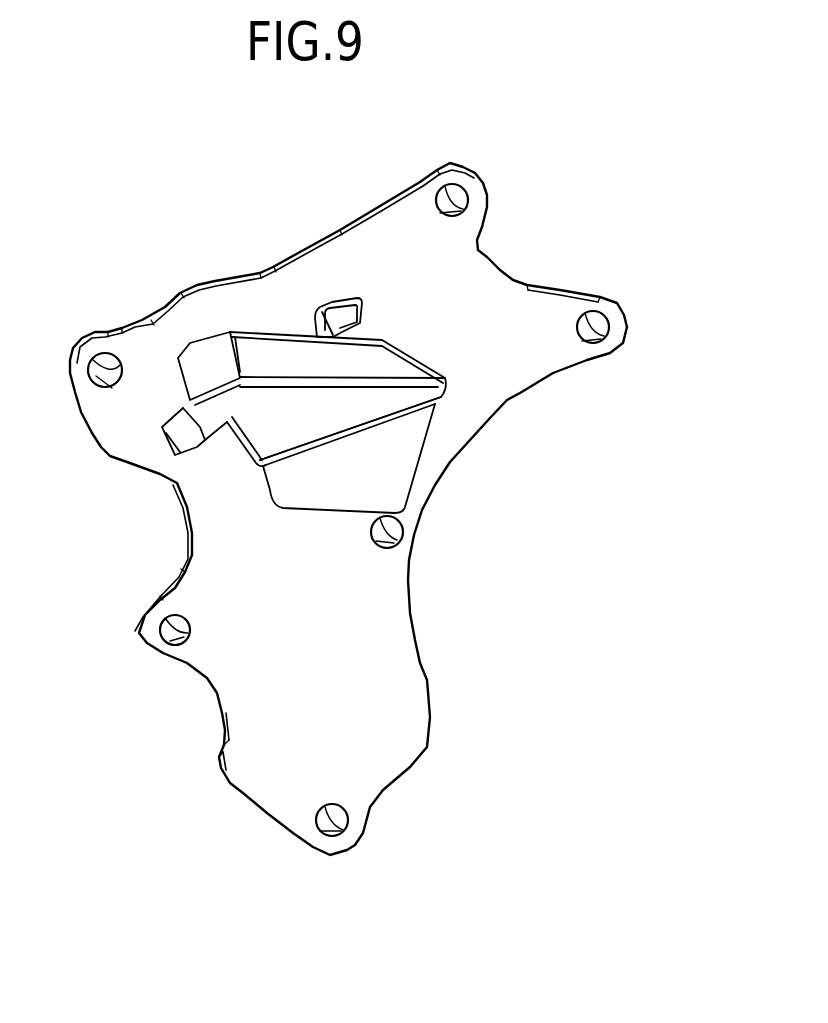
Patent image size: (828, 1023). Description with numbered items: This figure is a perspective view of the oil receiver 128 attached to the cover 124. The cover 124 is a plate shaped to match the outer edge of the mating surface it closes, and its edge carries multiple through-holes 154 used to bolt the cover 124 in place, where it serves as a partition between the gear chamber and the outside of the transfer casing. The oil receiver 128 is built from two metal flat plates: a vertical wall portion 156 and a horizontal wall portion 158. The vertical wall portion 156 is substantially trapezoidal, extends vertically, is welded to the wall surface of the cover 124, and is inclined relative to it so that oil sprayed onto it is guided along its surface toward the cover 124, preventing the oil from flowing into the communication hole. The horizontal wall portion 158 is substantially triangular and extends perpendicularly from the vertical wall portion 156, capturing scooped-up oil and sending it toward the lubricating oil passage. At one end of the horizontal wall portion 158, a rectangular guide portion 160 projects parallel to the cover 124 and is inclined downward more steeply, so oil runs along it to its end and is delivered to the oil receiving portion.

The cover 124 is at (390, 652).
The oil receiver 128 is at (298, 376).
The through-holes 154 is at (108, 380).
The vertical wall portion 156 is at (282, 290).
The horizontal wall portion 158 is at (295, 432).
The guide portion 160 is at (168, 430).